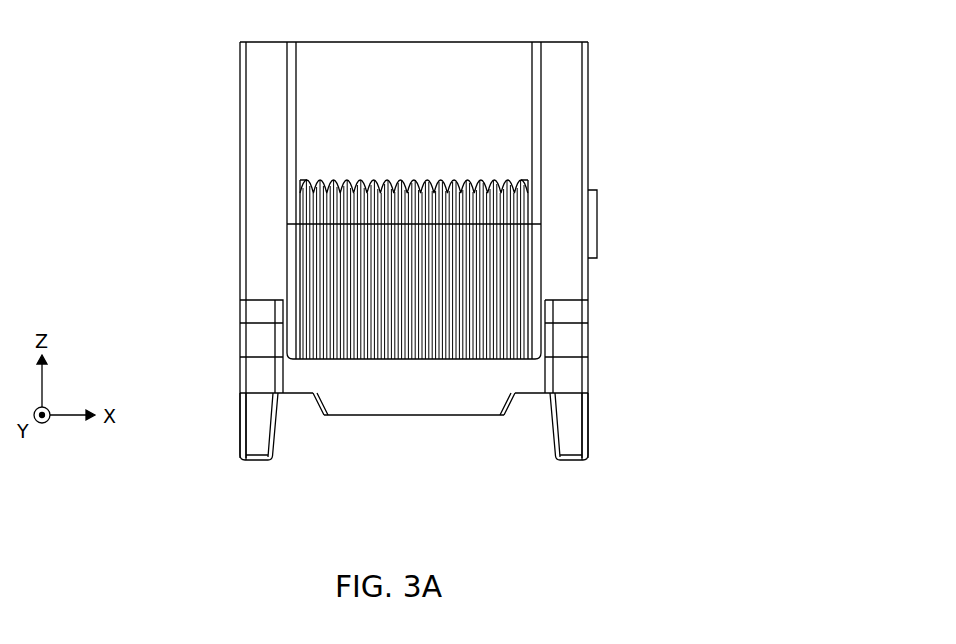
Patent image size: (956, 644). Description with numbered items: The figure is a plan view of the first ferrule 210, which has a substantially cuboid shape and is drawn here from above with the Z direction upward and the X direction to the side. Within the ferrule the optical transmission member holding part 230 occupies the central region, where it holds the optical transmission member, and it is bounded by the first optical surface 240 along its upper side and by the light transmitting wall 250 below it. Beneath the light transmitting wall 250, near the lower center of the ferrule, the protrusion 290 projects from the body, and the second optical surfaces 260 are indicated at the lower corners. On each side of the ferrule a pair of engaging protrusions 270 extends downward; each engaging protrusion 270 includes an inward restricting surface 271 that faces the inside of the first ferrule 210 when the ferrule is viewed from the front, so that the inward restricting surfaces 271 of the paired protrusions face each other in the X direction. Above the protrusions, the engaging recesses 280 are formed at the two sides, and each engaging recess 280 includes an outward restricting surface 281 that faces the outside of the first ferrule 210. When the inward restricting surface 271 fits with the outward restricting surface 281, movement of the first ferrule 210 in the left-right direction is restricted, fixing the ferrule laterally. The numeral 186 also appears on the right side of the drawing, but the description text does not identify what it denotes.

The first ferrule 210 is at (652, 67).
The optical transmission member holding part 230 is at (480, 287).
The first optical surface 240 is at (390, 360).
The light transmitting wall 250 is at (392, 382).
The second optical surfaces 260 is at (390, 395).
The engaging protrusions 270 is at (573, 430).
The inward restricting surface 271 is at (550, 413).
The engaging recesses 280 is at (263, 336).
The outward restricting surface 281 is at (283, 357).
The contact portion 186 is at (560, 372).
The protrusion 290 is at (422, 400).